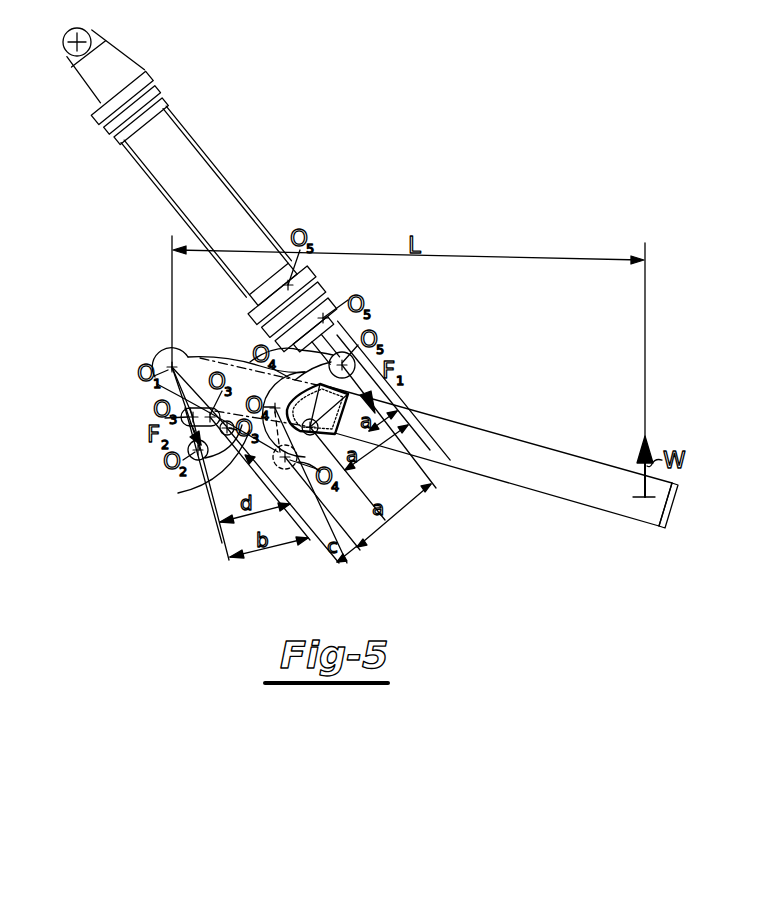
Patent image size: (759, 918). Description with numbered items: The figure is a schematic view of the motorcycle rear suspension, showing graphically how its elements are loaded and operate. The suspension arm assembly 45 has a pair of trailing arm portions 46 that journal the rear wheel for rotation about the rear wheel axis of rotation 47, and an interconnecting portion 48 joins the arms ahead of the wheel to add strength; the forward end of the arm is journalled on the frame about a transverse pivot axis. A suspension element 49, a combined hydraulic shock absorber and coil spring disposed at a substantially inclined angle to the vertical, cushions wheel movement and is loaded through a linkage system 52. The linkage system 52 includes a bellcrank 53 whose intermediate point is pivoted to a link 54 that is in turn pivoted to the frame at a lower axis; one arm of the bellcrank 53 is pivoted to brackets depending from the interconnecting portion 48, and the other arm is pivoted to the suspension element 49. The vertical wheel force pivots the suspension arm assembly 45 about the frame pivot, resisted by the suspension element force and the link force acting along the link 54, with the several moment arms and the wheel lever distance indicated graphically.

The suspension arm assembly 45 is at (472, 427).
The trailing arm portions 46 is at (505, 477).
The rear wheel axis of rotation 47 is at (670, 502).
The interconnecting portion 48 is at (250, 365).
The suspension element 49 is at (245, 205).
The linkage system 52 is at (212, 513).
The bellcrank 53 is at (283, 347).
The link 54 is at (178, 493).